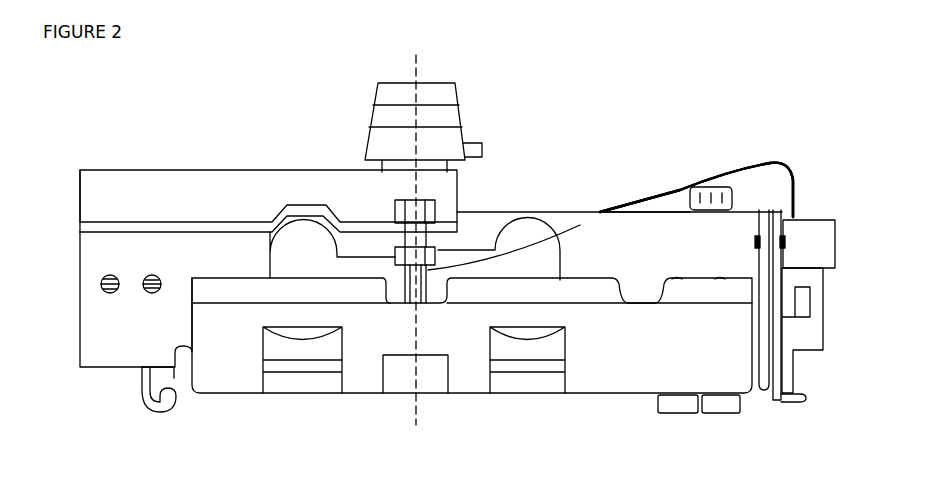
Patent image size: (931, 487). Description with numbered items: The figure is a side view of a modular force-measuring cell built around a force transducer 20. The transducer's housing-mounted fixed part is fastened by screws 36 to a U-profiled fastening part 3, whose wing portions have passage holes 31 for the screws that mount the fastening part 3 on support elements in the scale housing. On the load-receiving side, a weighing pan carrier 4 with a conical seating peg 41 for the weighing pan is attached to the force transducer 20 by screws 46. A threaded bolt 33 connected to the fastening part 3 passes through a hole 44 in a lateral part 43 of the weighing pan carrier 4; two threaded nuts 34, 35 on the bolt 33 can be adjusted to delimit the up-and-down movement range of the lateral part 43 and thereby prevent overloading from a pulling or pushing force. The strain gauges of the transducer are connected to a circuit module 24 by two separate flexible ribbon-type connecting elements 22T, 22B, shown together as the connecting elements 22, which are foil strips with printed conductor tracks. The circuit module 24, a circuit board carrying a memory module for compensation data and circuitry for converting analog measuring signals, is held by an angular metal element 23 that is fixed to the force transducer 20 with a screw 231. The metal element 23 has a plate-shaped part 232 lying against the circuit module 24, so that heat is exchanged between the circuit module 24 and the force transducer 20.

The fastening part 3 is at (229, 364).
The weighing pan carrier 4 is at (264, 160).
The force transducer 20 is at (120, 364).
The flexible ribbon-type connecting element 22T is at (752, 163).
The flexible ribbon-type connecting element 22B is at (696, 190).
The flexible ribbon-type connecting elements 22 is at (696, 190).
The angular metal element 23 is at (678, 208).
The circuit module 24 is at (812, 202).
The passage holes 31 is at (222, 277).
The threaded bolt 33 is at (580, 225).
The threaded nut 34 is at (440, 252).
The threaded nut 35 is at (435, 207).
The screws 36 is at (677, 415).
The conical seating peg 41 is at (433, 113).
The lateral part 43 is at (370, 228).
The hole 44 is at (395, 246).
The screws 46 is at (135, 168).
The screw 231 is at (707, 186).
The plate-shaped part 232 is at (768, 347).